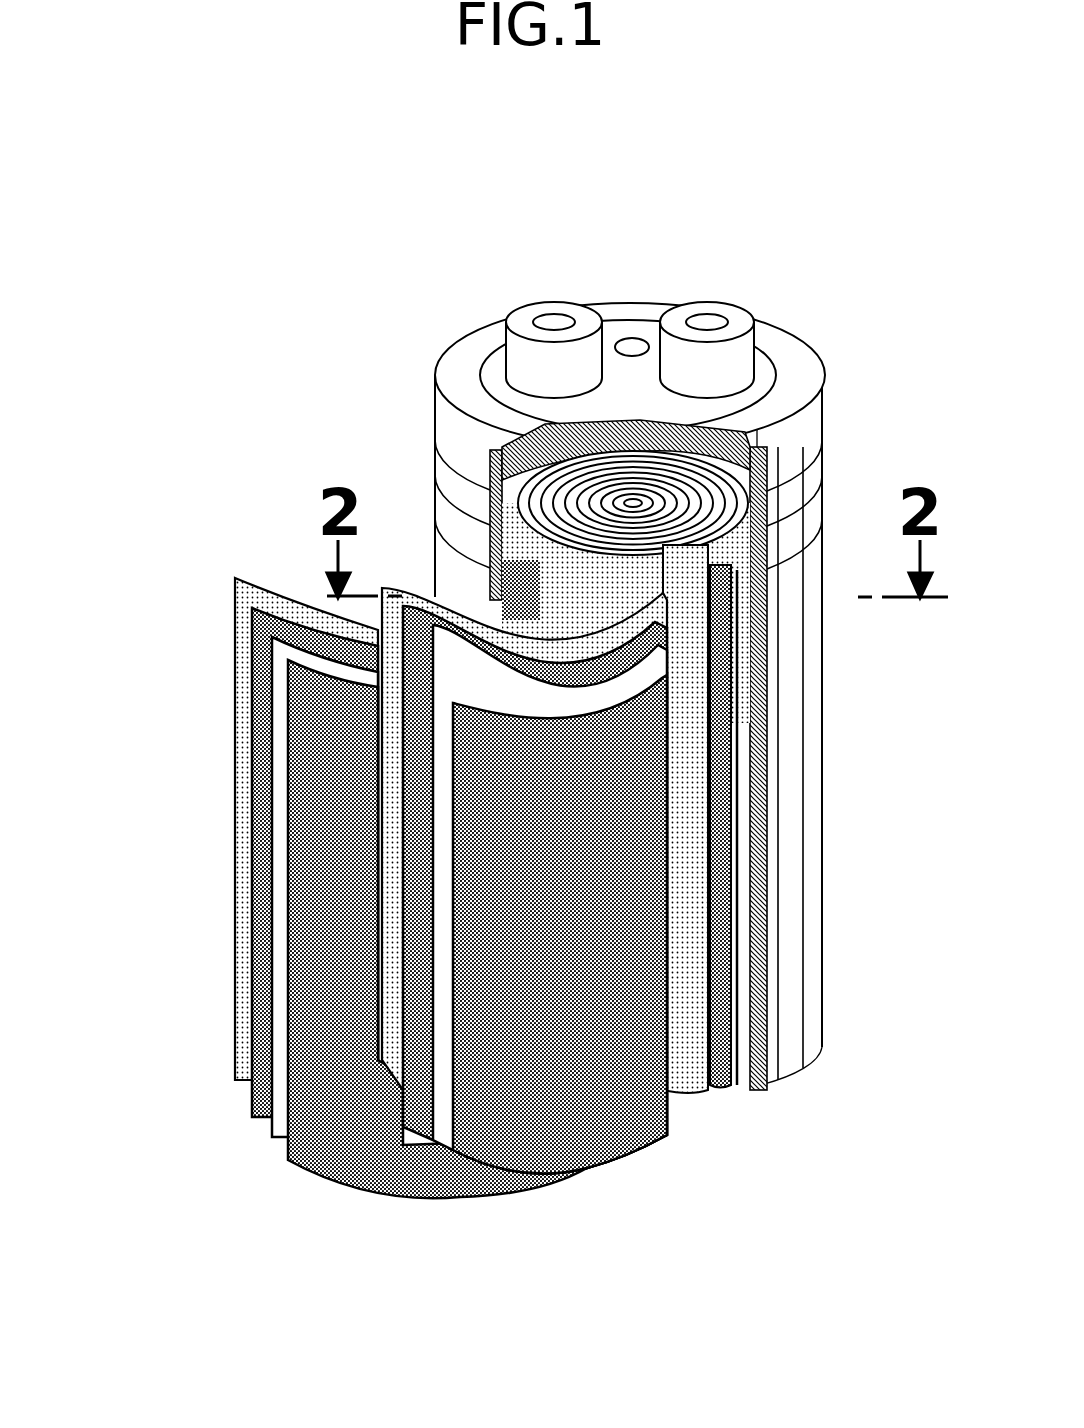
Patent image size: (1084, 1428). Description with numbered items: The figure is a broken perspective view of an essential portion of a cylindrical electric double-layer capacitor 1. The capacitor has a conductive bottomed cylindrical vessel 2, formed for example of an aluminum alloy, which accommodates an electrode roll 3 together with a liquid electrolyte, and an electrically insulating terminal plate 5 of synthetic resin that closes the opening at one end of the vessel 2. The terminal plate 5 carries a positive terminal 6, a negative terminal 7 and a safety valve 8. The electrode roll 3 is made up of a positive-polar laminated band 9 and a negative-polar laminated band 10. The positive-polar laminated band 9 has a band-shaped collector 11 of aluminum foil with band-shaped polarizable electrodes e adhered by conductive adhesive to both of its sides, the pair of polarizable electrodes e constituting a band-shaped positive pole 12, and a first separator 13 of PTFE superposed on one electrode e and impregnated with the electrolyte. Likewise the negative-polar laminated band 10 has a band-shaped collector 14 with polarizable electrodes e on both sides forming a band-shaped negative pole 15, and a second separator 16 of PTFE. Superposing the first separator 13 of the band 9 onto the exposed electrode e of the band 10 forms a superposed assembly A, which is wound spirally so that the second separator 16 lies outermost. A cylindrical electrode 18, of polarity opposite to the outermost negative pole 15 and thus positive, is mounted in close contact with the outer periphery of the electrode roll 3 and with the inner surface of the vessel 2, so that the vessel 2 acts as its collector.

The cylindrical electric double-layer capacitor 1 is at (648, 618).
The conductive bottomed cylindrical vessel 2 is at (797, 793).
The electrode roll 3 is at (668, 488).
The terminal plate 5 is at (500, 386).
The positive terminal 6 is at (525, 314).
The negative terminal 7 is at (698, 306).
The safety valve 8 is at (633, 332).
The positive-polar laminated band 9 is at (668, 1143).
The negative-polar laminated band 10 is at (375, 878).
The band-shaped collector 11 is at (445, 915).
The band-shaped positive pole 12 is at (524, 955).
The first separator 13 is at (380, 953).
The band-shaped collector 14 is at (275, 836).
The band-shaped negative pole 15 is at (375, 903).
The second separator 16 is at (235, 715).
The cylindrical electrode 18 is at (742, 963).
The superposed assembly A is at (601, 1215).
The band-shaped polarizable electrodes e is at (253, 1108).